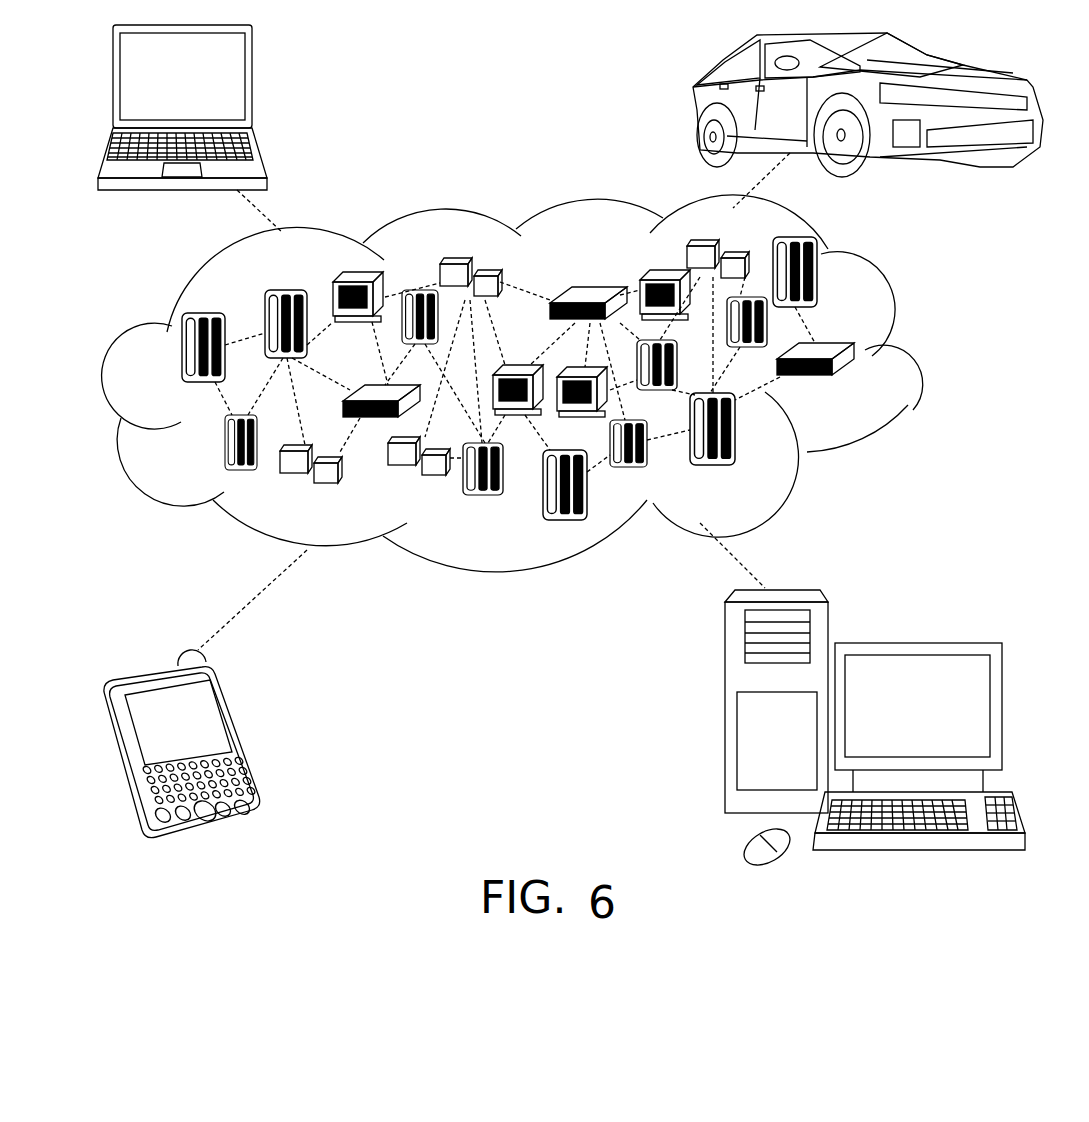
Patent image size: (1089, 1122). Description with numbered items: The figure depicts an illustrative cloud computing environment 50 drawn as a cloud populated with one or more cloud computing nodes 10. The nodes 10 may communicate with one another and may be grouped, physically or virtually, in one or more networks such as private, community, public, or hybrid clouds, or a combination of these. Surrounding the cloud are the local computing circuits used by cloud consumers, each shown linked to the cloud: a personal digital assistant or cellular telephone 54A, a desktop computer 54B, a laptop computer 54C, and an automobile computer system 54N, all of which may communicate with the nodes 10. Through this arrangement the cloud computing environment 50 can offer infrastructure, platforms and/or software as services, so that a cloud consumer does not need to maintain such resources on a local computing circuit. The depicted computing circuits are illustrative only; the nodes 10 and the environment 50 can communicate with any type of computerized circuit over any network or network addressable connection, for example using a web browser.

The cloud computing node 10 is at (870, 388).
The cloud computing environment 50 is at (920, 358).
The personal digital assistant or cellular telephone 54A is at (242, 738).
The desktop computer 54B is at (913, 643).
The laptop computer 54C is at (253, 88).
The automobile computer system 54N is at (695, 102).